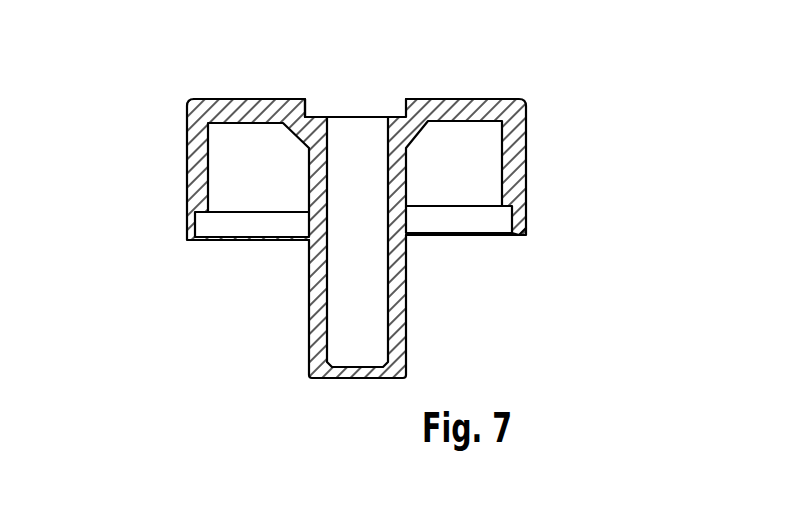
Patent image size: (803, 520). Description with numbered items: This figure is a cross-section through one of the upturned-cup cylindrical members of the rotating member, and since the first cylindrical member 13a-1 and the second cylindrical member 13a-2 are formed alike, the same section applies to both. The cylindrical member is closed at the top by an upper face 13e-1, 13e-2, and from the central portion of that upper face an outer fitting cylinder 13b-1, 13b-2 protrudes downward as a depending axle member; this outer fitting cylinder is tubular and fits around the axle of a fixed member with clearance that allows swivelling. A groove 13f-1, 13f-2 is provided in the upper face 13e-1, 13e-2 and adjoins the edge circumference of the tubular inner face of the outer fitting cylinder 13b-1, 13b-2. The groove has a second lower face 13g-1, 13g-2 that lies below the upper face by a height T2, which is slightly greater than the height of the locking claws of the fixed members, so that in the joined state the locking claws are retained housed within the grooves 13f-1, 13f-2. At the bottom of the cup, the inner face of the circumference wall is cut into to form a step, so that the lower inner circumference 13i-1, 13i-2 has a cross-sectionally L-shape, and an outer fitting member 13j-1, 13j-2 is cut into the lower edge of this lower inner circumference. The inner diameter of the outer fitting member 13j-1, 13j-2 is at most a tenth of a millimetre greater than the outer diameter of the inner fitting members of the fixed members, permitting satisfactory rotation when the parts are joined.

The first cylindrical member 13a-1 is at (185, 169).
The second cylindrical member 13a-2 is at (186, 181).
The outer fitting cylinder 13b-1 is at (294, 247).
The outer fitting cylinder 13b-2 is at (308, 319).
The upper face 13e-1 is at (249, 60).
The upper face 13e-2 is at (238, 99).
The groove 13f-1 is at (468, 62).
The groove 13f-2 is at (399, 103).
The second lower face 13g-1 is at (370, 60).
The second lower face 13g-2 is at (393, 116).
The lower inner circumference 13i-1 is at (536, 181).
The lower inner circumference 13i-2 is at (516, 210).
The outer fitting member 13j-1 is at (588, 279).
The outer fitting member 13j-2 is at (525, 233).
The height T2 is at (333, 138).